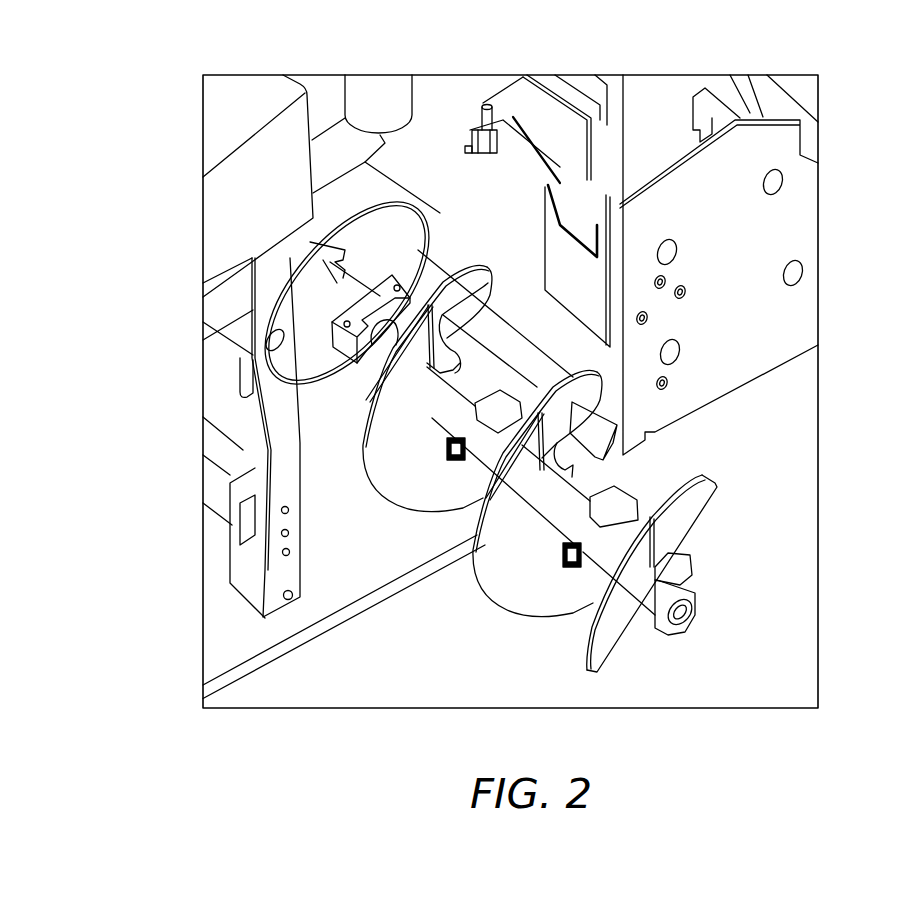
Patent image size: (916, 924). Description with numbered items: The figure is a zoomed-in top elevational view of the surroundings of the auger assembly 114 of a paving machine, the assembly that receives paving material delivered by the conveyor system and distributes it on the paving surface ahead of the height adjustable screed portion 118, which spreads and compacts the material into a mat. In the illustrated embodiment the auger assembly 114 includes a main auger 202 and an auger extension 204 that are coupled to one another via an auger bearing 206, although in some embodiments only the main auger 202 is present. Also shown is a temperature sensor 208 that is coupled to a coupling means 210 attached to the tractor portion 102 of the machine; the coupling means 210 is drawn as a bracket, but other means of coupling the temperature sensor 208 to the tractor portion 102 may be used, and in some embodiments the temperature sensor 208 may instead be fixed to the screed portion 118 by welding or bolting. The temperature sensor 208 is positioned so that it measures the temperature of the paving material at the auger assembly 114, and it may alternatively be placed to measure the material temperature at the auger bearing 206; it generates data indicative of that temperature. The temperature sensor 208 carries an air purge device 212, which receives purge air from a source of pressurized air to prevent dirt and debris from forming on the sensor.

The tractor portion 102 is at (302, 605).
The auger assembly 114 is at (768, 611).
The screed portion 118 is at (757, 234).
The main auger 202 is at (400, 190).
The auger extension 204 is at (522, 625).
The auger bearing 206 is at (338, 322).
The temperature sensor 208 is at (487, 104).
The coupling means 210 is at (517, 148).
The air purge device 212 is at (470, 135).